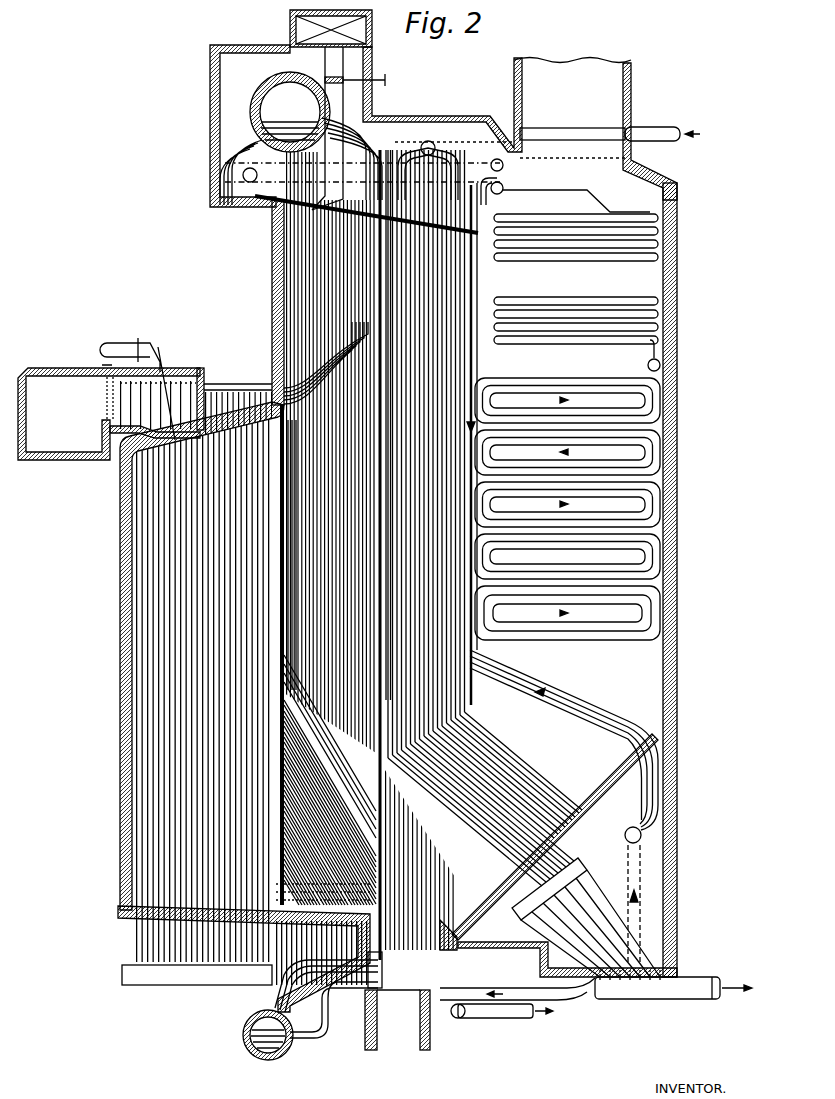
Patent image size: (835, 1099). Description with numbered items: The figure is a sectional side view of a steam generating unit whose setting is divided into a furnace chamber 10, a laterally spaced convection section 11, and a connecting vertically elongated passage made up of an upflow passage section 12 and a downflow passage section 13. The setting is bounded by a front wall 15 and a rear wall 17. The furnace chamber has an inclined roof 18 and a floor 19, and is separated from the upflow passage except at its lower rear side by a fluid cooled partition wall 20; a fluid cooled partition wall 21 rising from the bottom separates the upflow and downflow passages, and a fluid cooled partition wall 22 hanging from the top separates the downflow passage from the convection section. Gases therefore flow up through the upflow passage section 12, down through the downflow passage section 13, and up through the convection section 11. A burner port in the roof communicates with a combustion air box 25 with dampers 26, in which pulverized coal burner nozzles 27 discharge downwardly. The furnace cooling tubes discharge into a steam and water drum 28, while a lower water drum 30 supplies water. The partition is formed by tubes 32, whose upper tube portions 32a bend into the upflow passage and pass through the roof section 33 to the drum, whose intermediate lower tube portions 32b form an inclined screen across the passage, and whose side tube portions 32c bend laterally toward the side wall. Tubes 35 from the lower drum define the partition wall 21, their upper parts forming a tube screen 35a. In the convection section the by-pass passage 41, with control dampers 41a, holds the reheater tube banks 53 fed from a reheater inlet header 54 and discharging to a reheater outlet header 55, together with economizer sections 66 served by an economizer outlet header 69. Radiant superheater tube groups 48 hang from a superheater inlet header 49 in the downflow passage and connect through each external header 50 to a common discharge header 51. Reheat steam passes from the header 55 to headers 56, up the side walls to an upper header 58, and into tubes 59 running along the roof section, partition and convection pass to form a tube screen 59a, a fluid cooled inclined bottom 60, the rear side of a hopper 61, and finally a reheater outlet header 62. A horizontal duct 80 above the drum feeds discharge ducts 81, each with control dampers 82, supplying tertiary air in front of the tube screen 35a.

The furnace chamber 10 is at (207, 601).
The convection section 11 is at (560, 574).
The upflow passage section 12 is at (330, 577).
The downflow passage section 13 is at (432, 549).
The front wall 15 is at (120, 650).
The rear wall 17 is at (678, 507).
The inclined roof 18 is at (283, 395).
The floor 19 is at (120, 935).
The fluid cooled partition wall 20 is at (280, 525).
The fluid cooled partition wall 21 is at (378, 648).
The fluid cooled partition wall 22 is at (468, 575).
The combustion air box 25 is at (200, 372).
The dampers 26 is at (108, 395).
The pulverized coal burner nozzles 27 is at (178, 400).
The steam and water drum 28 is at (265, 88).
The lower water drum 30 is at (243, 1045).
The tubes 32 is at (300, 535).
The tube portions 32a is at (330, 335).
The tube portions 32b is at (333, 785).
The tube portions 32c is at (310, 785).
The roof section 33 is at (430, 230).
The tubes 35 is at (378, 974).
The tube screen 35a is at (395, 285).
The by-pass passage 41 is at (582, 366).
The control dampers 41a is at (556, 128).
The superheater tube groups 48 is at (483, 757).
The superheater inlet header 49 is at (430, 142).
The external header 50 is at (580, 858).
The common discharge header 51 is at (695, 977).
The reheater tube banks 53 is at (600, 520).
The reheater inlet header 54 is at (503, 192).
The reheater outlet header 55 is at (626, 840).
The headers 56 is at (352, 1003).
The upper header 58 is at (243, 176).
The tubes 59 is at (248, 185).
The tube screen 59a is at (595, 700).
The fluid cooled inclined bottom 60 is at (578, 835).
The hopper 61 is at (407, 1034).
The reheater outlet header 62 is at (505, 1018).
The economizer sections 66 is at (590, 297).
The economizer outlet header 69 is at (497, 158).
The horizontal duct 80 is at (300, 22).
The discharge ducts 81 is at (345, 108).
The control dampers 82 is at (345, 80).